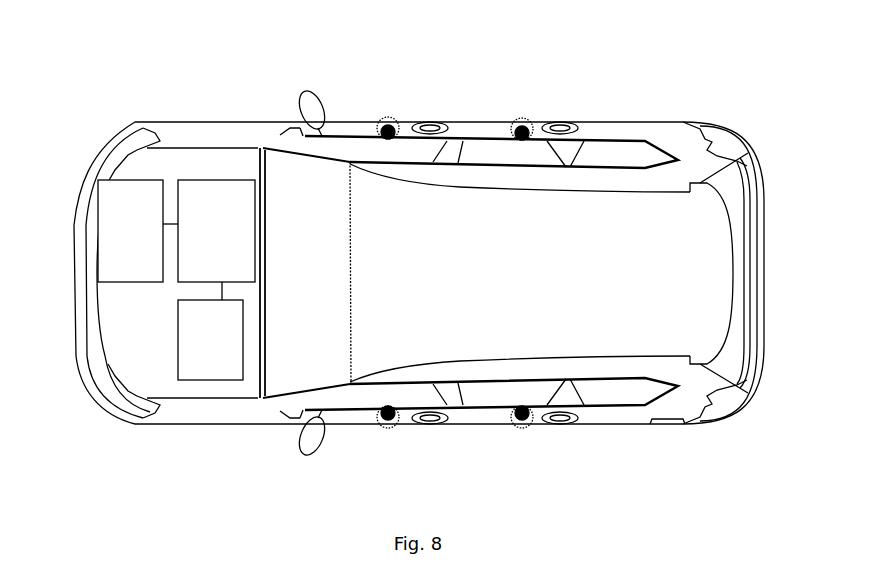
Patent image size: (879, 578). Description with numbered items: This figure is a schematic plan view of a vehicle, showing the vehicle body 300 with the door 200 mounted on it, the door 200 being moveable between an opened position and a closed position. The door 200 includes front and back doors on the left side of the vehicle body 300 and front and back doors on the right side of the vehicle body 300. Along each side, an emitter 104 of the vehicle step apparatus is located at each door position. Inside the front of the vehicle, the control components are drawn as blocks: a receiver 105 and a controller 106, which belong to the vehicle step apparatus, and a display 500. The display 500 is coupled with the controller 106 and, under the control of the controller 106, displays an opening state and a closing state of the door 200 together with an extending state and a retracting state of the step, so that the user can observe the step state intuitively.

The vehicle body 300 is at (612, 257).
The door 200 is at (343, 156).
The emitter 104 is at (389, 125).
The display 500 is at (130, 231).
The controller 106 is at (209, 231).
The receiver 105 is at (210, 331).